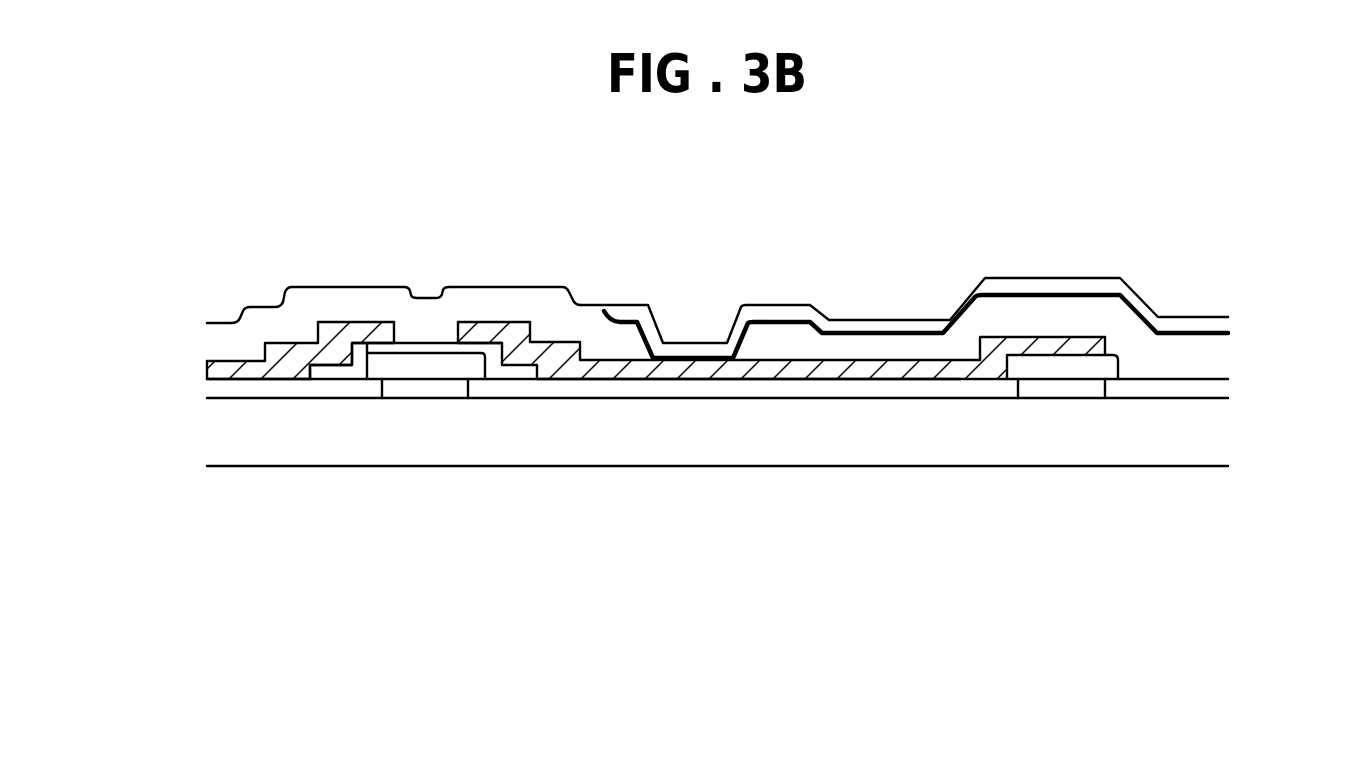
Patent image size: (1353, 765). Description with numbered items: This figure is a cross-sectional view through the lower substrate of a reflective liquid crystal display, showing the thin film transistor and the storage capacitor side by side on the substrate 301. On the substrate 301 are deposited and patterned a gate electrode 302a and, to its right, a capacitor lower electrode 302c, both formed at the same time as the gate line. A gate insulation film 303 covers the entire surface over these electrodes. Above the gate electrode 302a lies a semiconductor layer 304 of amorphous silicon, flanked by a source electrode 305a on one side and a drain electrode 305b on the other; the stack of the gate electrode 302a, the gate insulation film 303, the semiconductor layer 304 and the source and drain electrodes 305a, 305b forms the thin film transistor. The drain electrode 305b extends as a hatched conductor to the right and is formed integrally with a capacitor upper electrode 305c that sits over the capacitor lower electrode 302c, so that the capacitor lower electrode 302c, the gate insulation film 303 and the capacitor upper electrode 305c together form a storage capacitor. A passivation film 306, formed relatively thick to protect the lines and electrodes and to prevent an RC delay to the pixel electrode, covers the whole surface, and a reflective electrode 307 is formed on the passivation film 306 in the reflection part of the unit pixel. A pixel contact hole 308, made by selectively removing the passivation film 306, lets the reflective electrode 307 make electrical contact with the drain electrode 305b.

The substrate 301 is at (1202, 436).
The gate electrode 302a is at (427, 388).
The capacitor lower electrode 302c is at (1062, 388).
The gate insulation film 303 is at (886, 388).
The semiconductor layer 304 is at (333, 360).
The source electrode 305a is at (220, 367).
The drain electrode 305b is at (682, 388).
The capacitor upper electrode 305c is at (1064, 368).
The passivation film 306 is at (872, 350).
The reflective electrode 307 is at (786, 308).
The pixel contact hole 308 is at (698, 319).